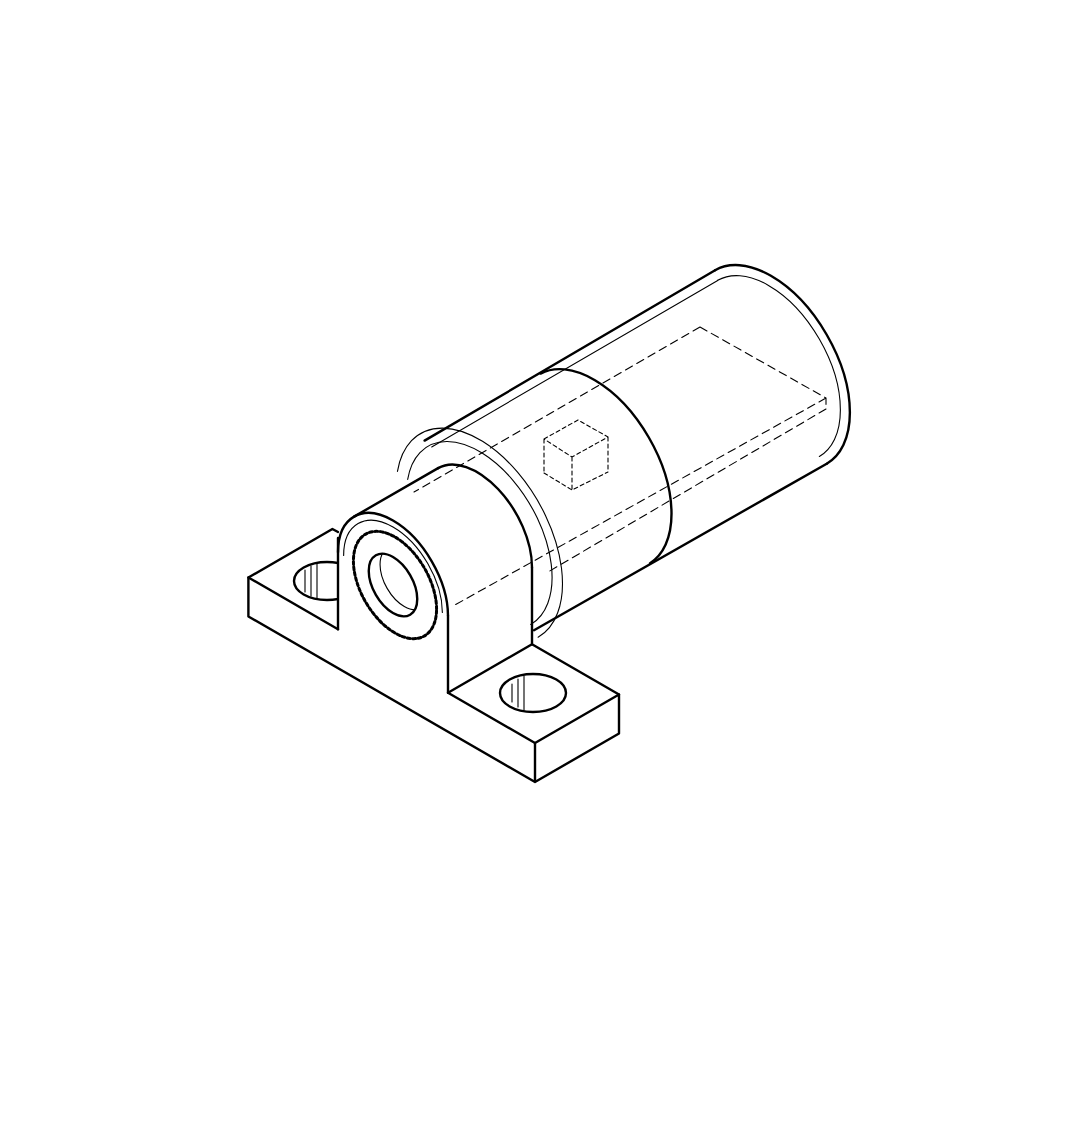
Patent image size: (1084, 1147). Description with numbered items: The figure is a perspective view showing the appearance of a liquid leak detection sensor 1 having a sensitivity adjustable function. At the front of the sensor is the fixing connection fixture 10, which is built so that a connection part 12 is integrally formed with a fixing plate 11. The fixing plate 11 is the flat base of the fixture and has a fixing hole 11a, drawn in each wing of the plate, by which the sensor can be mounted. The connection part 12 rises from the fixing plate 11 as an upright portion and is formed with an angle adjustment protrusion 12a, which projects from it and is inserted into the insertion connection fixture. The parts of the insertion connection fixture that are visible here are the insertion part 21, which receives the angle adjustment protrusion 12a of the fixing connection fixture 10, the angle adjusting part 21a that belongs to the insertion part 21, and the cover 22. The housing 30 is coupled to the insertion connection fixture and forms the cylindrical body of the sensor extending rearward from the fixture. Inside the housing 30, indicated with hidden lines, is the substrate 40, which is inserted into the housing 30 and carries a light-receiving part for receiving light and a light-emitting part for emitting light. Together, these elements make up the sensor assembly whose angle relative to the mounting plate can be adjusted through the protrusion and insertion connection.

The liquid leak detection sensor 1 is at (601, 265).
The fixing connection fixture 10 is at (222, 556).
The fixing plate 11 is at (578, 744).
The fixing hole 11a is at (540, 700).
The connection part 12 is at (421, 492).
The angle adjustment protrusion 12a is at (342, 548).
The insertion part 21 is at (388, 612).
The angle adjusting part 21a is at (423, 640).
The cover 22 is at (610, 577).
The housing 30 is at (823, 290).
The substrate 40 is at (784, 383).